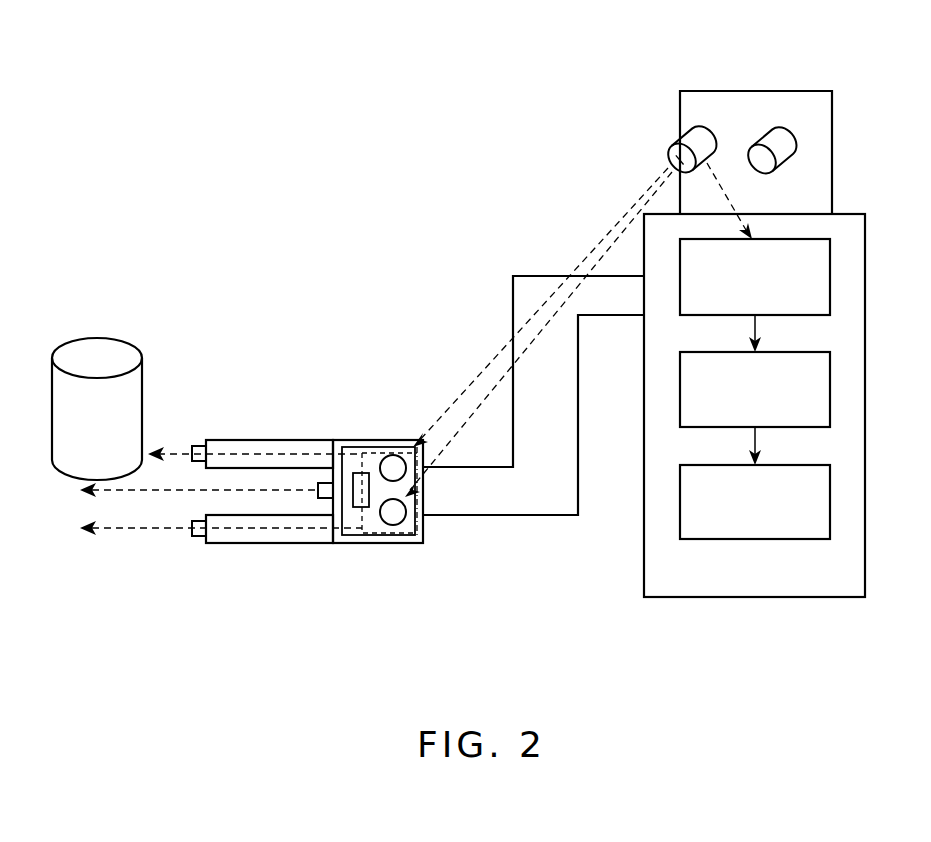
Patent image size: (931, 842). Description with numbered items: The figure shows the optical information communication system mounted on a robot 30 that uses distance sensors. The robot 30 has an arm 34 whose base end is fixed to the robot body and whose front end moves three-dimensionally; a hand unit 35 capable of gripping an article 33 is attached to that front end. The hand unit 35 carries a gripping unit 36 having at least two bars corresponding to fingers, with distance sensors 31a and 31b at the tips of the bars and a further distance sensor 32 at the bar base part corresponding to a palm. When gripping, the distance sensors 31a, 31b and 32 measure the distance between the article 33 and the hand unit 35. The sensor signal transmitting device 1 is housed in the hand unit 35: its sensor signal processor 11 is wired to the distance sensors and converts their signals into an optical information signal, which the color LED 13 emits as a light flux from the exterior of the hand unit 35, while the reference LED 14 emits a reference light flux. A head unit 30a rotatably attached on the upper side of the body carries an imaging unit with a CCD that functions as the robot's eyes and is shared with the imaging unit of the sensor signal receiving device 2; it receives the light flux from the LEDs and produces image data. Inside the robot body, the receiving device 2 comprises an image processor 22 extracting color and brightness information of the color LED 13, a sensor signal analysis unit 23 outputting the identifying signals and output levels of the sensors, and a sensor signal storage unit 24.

The sensor signal transmitting device 1 is at (371, 446).
The sensor signal receiving device 2 is at (866, 242).
The sensor signal processor 11 is at (360, 507).
The color LED 13 is at (406, 519).
The reference LED 14 is at (393, 454).
The image processor 22 is at (812, 317).
The sensor signal analysis unit 23 is at (812, 428).
The sensor signal storage unit 24 is at (812, 540).
The robot 30 is at (755, 598).
The head unit 30a is at (792, 91).
The distance sensor 31a is at (197, 540).
The distance sensor 31b is at (196, 445).
The distance sensor 32 is at (324, 499).
The article 33 is at (95, 338).
The arm 34 is at (543, 516).
The hand unit 35 is at (392, 545).
The gripping unit 36 is at (284, 440).